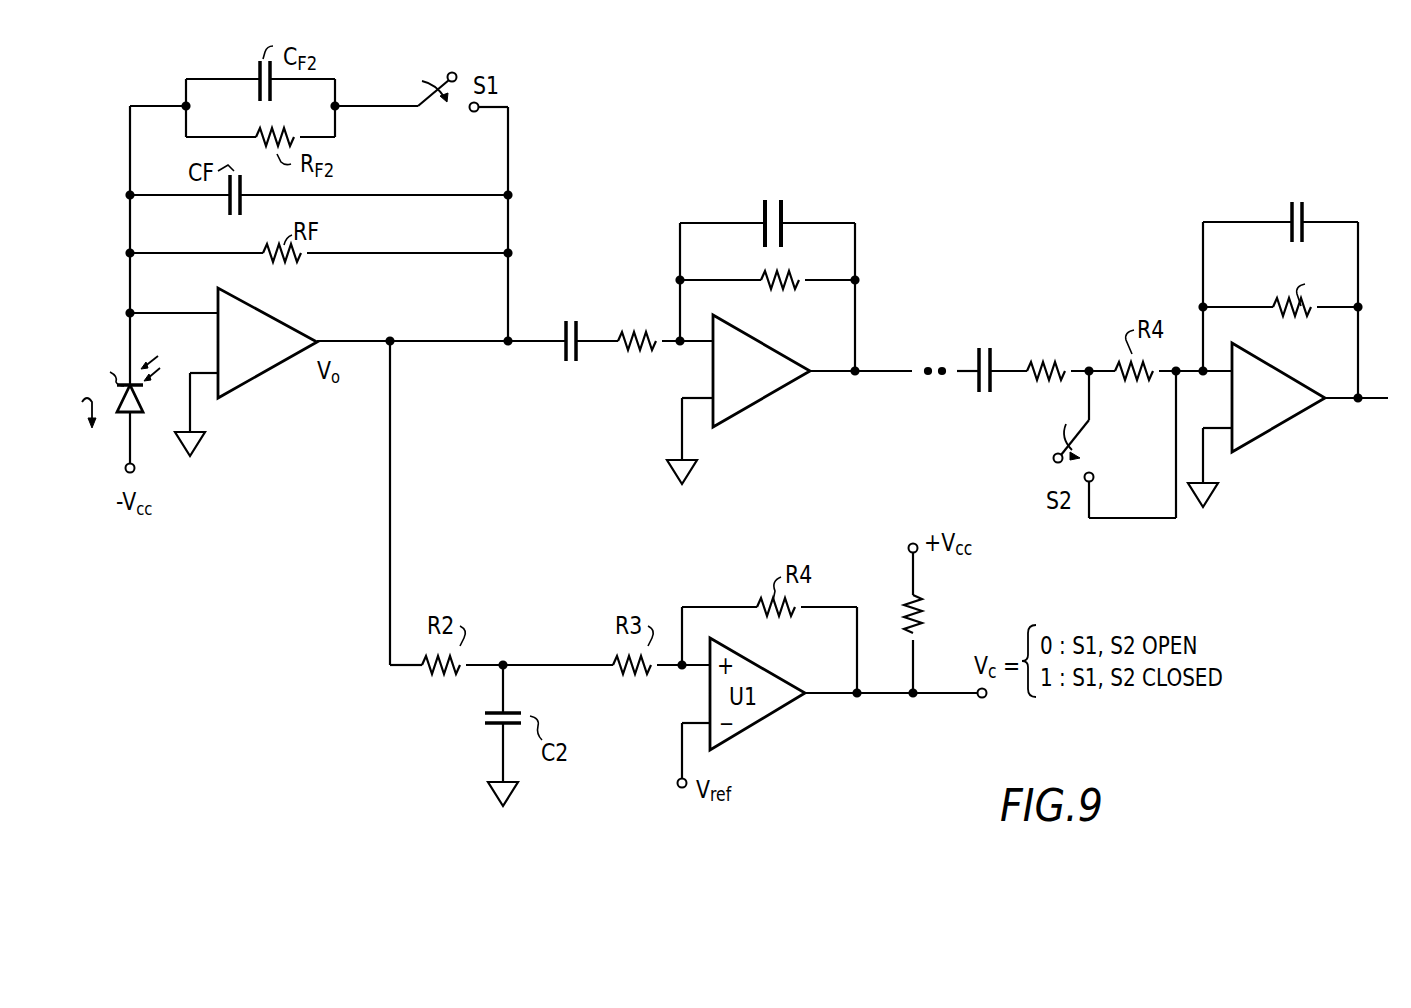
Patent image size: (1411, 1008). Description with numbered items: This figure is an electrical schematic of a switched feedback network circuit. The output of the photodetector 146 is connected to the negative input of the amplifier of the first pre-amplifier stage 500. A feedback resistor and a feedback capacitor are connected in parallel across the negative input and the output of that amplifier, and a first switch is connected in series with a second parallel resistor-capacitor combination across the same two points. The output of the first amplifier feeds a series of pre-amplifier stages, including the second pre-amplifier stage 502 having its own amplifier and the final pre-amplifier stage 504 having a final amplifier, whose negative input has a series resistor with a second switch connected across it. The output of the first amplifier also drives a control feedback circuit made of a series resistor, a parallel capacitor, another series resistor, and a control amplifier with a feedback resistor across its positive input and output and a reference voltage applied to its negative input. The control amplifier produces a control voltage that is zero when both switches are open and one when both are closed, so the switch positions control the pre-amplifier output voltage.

The photodetector 146 is at (116, 414).
The first pre-amplifier stage 500 is at (233, 420).
The second pre-amplifier stage 502 is at (738, 445).
The final pre-amplifier stage 504 is at (1252, 480).